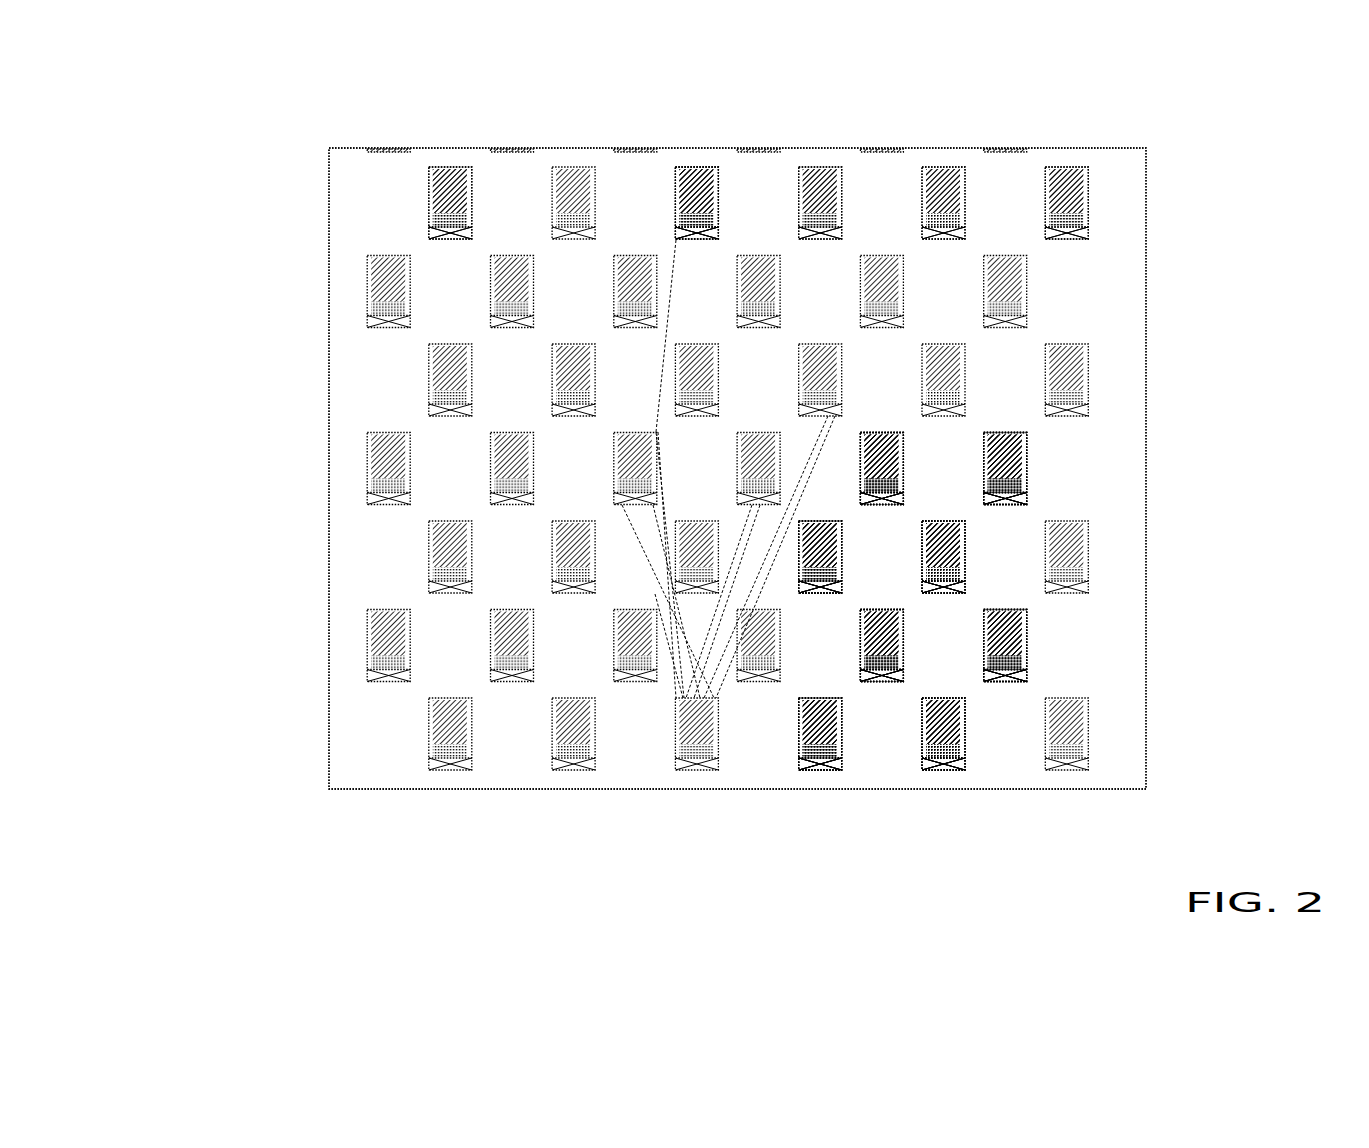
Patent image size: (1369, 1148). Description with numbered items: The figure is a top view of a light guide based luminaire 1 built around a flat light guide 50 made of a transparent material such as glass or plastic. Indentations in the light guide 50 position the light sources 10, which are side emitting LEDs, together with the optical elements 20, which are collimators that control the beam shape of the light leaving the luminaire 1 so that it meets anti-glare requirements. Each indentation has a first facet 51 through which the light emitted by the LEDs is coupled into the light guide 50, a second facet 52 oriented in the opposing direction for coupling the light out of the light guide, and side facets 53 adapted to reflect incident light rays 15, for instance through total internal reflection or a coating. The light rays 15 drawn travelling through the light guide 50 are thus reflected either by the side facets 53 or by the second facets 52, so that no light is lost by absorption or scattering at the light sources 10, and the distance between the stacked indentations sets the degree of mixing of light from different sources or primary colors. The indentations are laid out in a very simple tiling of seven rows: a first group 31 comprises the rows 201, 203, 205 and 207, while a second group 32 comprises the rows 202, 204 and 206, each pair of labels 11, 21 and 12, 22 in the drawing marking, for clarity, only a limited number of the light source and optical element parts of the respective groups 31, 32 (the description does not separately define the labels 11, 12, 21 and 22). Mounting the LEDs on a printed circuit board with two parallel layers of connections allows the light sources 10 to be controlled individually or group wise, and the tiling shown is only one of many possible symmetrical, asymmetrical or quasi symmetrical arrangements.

The luminaire 1 is at (124, 112).
The light source 10 is at (1054, 215).
The light receiving portion 11 is at (830, 576).
The light receiving portion 12 is at (893, 486).
The light ray 15 is at (668, 307).
The optical element 20 is at (940, 170).
The light emitting portion 21 is at (830, 531).
The light emitting portion 22 is at (892, 442).
The first group 31 is at (902, 582).
The second group 32 is at (963, 490).
The light guide 50 is at (383, 186).
The first facet 51 is at (700, 170).
The second facet 52 is at (820, 233).
The side facet 53 is at (474, 192).
The row 201 is at (217, 741).
The row 202 is at (217, 652).
The row 203 is at (217, 564).
The row 204 is at (217, 476).
The row 205 is at (217, 387).
The row 206 is at (217, 298).
The row 207 is at (217, 210).